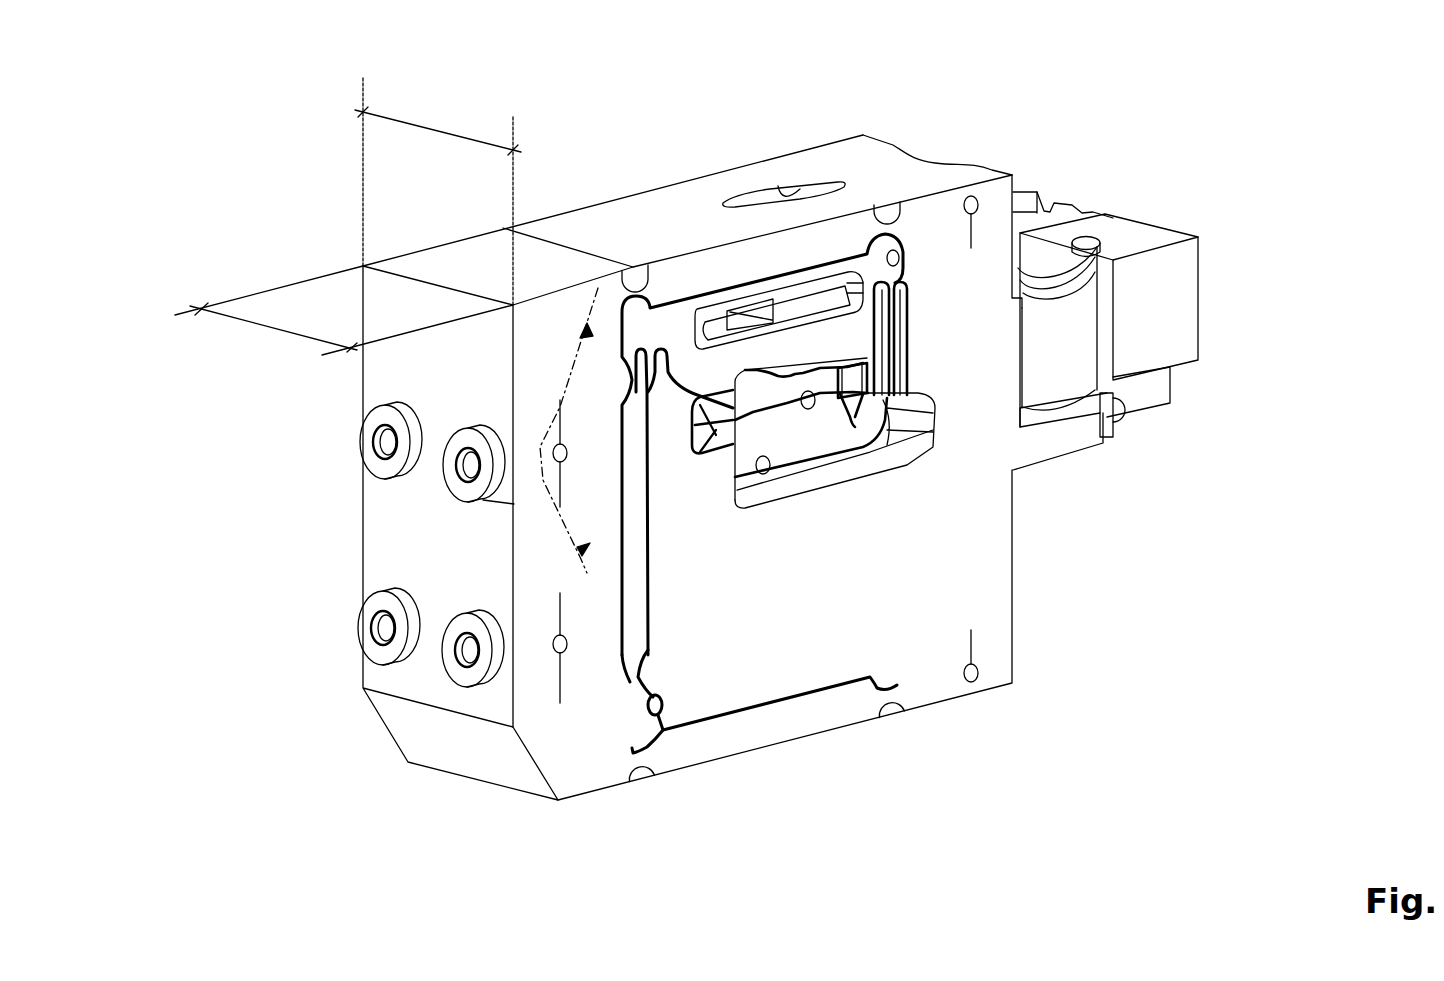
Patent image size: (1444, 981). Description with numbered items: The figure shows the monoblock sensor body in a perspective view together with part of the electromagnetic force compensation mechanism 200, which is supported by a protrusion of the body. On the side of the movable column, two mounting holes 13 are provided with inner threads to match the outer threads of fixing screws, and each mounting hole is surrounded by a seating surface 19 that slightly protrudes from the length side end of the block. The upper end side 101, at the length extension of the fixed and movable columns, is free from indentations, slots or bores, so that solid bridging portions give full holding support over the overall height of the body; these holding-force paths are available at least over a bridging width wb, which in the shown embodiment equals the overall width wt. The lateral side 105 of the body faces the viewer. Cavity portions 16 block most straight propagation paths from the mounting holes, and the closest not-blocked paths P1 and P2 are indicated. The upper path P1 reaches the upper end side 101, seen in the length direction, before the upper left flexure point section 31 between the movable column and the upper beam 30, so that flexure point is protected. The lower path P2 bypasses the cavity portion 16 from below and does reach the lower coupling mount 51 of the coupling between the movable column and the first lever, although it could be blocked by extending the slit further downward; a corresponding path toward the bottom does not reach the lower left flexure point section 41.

The mounting hole 13 is at (467, 650).
The cavity portion 16 is at (360, 290).
The seating surface 19 is at (473, 677).
The upper beam 30 is at (677, 227).
The upper left flexure point section 31 is at (633, 265).
The lower left flexure point section 41 is at (646, 795).
The lower coupling mount 51 is at (652, 668).
The upper end side 101 is at (467, 263).
The lateral side 105 is at (962, 562).
The electromagnetic force compensation mechanism 200 is at (1188, 215).
The propagation path P1 is at (567, 368).
The propagation path P2 is at (587, 573).
The total width dimension wt is at (438, 191).
The bridging width dimension wb is at (344, 310).